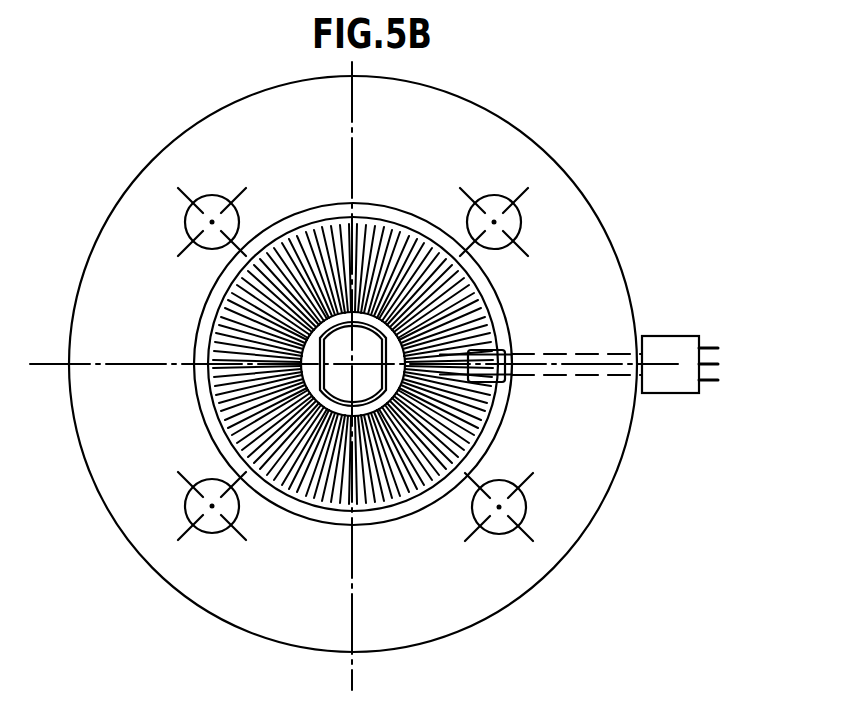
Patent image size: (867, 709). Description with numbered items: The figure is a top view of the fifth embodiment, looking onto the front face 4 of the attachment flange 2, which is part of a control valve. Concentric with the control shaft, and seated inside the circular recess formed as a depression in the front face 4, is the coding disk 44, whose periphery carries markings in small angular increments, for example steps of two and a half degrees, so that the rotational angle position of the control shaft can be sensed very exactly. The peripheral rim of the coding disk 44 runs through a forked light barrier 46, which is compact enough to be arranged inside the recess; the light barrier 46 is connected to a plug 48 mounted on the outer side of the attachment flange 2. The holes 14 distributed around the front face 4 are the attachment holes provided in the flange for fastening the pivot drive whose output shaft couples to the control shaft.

The attachment flange 2 is at (602, 518).
The front face 4 is at (618, 430).
The mounting hole 14 is at (510, 222).
The coding disk 44 is at (402, 493).
The forked light barrier 46 is at (511, 352).
The plug 48 is at (686, 395).